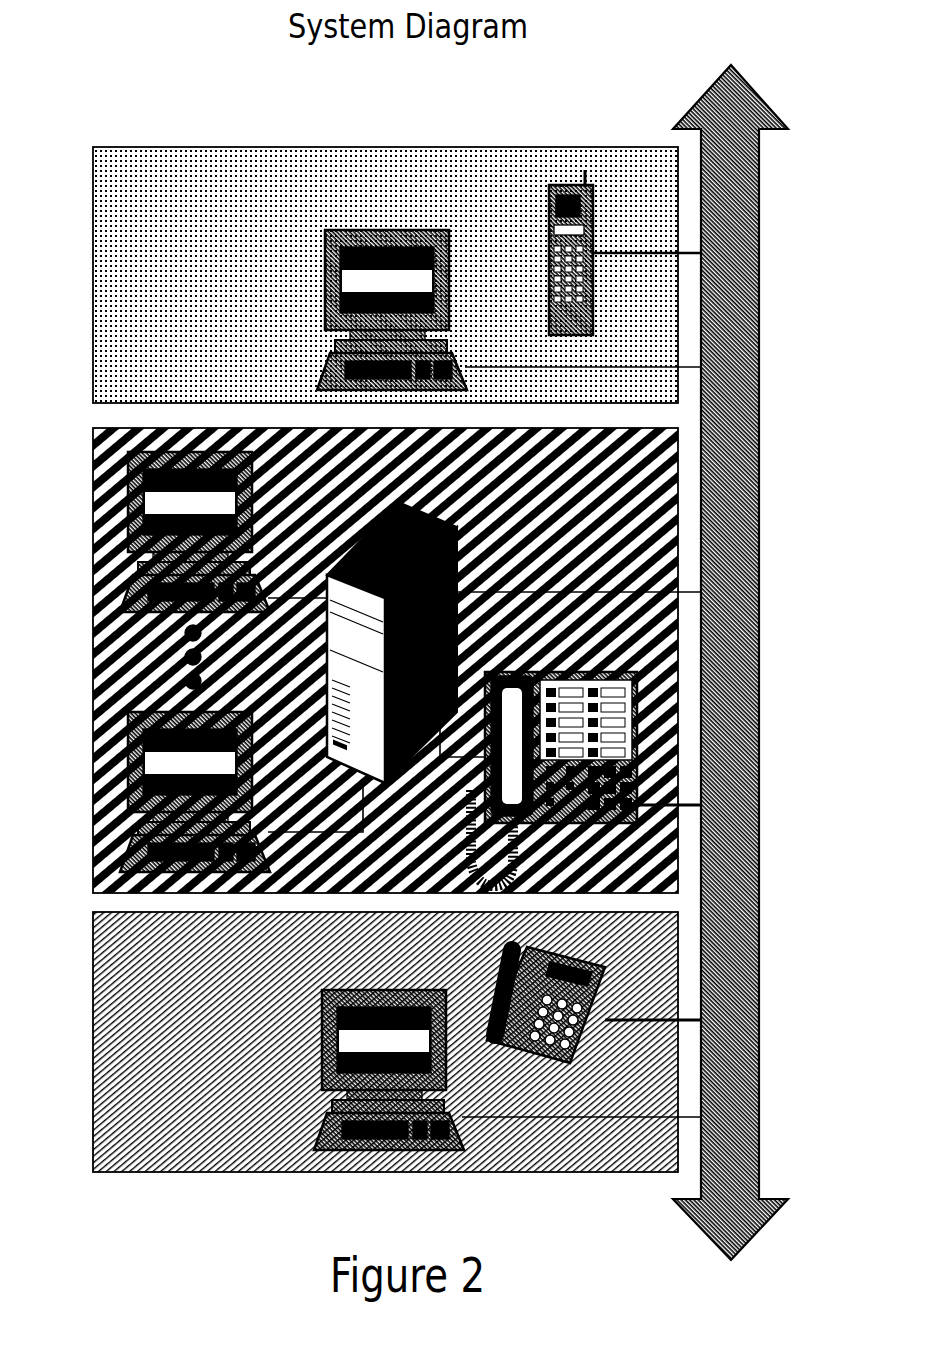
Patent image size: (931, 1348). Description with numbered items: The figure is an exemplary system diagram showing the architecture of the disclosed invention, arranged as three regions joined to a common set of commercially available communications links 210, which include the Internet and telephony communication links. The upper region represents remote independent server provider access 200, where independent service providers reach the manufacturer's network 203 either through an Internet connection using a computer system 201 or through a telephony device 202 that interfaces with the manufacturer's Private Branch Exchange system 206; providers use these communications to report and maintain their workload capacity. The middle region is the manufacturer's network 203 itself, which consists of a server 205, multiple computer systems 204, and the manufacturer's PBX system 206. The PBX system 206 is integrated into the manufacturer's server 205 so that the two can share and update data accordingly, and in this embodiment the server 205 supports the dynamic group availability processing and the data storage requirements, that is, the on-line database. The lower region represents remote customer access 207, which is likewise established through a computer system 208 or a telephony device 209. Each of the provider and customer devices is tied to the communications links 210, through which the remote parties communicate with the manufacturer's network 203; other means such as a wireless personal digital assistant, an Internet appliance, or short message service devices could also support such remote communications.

The remote independent server provider access 200 is at (91, 290).
The computer system 201 is at (325, 288).
The telephony device 202 is at (549, 265).
The manufacturer's network 203 is at (91, 685).
The computer systems 204 is at (253, 498).
The server 205 is at (457, 565).
The Private Branch Exchange (PBX) system 206 is at (573, 672).
The remote customer access 207 is at (91, 1045).
The computer system 208 is at (322, 1028).
The telephony device 209 is at (605, 995).
The commercially available communications links 210 is at (761, 480).